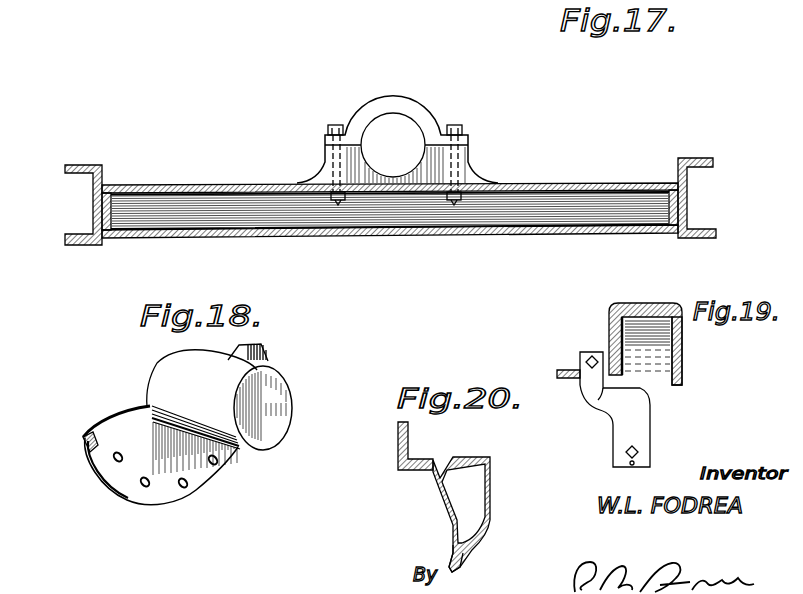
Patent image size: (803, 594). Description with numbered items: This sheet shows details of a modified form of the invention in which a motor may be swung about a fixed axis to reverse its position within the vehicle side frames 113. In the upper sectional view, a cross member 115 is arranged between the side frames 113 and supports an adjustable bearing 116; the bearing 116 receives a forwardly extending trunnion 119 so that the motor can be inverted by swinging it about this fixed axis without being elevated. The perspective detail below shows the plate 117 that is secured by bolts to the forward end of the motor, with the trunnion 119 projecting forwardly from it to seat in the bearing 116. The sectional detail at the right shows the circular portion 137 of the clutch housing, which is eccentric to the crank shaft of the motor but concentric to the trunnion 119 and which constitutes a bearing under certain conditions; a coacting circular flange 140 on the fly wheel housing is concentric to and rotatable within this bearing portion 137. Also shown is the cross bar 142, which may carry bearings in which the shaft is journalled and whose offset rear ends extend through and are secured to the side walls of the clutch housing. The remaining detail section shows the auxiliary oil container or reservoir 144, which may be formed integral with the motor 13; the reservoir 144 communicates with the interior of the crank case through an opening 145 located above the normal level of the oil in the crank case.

In FIG. 20, the motor 13 is at (408, 443).
In FIG. 17, the vehicle side frame 113 is at (100, 165).
In FIG. 17, the cross member 115 is at (462, 241).
In FIG. 17, the adjustable bearing 116 is at (386, 96).
In FIG. 18, the plate 117 is at (129, 417).
In FIG. 17, the trunnion 119 is at (404, 134).
In FIG. 18, the trunnion 119 is at (271, 441).
In FIG. 19, the circular portion of the clutch housing 137 is at (667, 303).
In FIG. 19, the circular flange 140 is at (681, 349).
In FIG. 19, the cross bar 142 is at (650, 450).
In FIG. 20, the auxiliary oil container 144 is at (493, 459).
In FIG. 20, the opening 145 is at (462, 537).